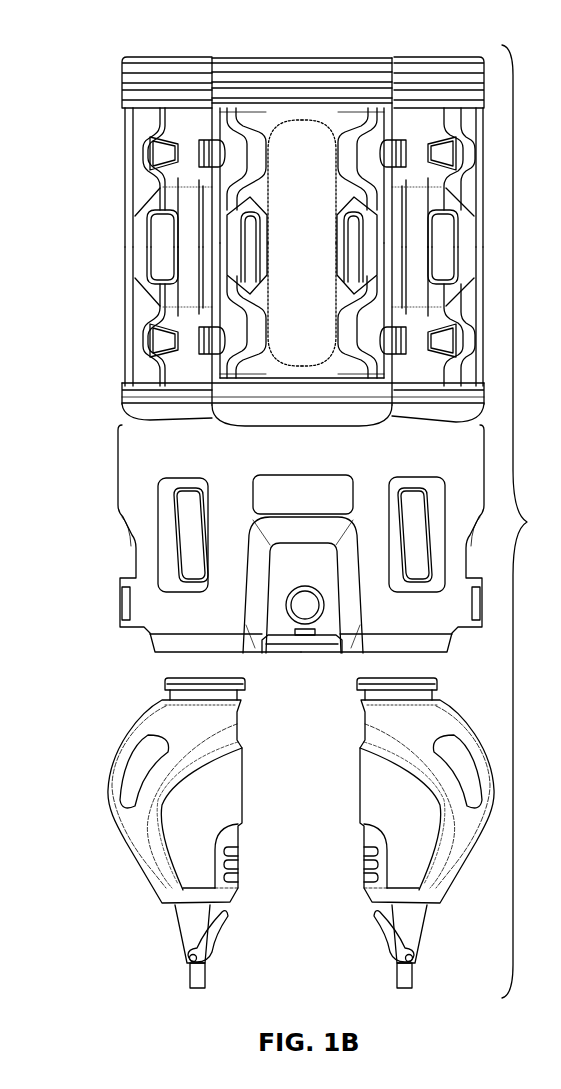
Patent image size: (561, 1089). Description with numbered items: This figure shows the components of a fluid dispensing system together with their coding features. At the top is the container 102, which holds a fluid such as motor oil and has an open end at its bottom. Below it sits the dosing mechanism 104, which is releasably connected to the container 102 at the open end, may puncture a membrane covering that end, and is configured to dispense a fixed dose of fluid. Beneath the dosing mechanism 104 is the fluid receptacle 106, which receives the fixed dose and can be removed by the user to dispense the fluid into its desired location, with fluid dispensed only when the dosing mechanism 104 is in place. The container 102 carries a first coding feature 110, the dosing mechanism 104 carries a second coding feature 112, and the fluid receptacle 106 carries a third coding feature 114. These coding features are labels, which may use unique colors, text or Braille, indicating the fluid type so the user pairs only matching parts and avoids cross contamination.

The container 102 is at (128, 214).
The dosing mechanism 104 is at (113, 480).
The fluid receptacle 106 is at (107, 776).
The first coding feature 110 is at (312, 178).
The second coding feature 112 is at (262, 500).
The third coding feature 114 is at (395, 803).